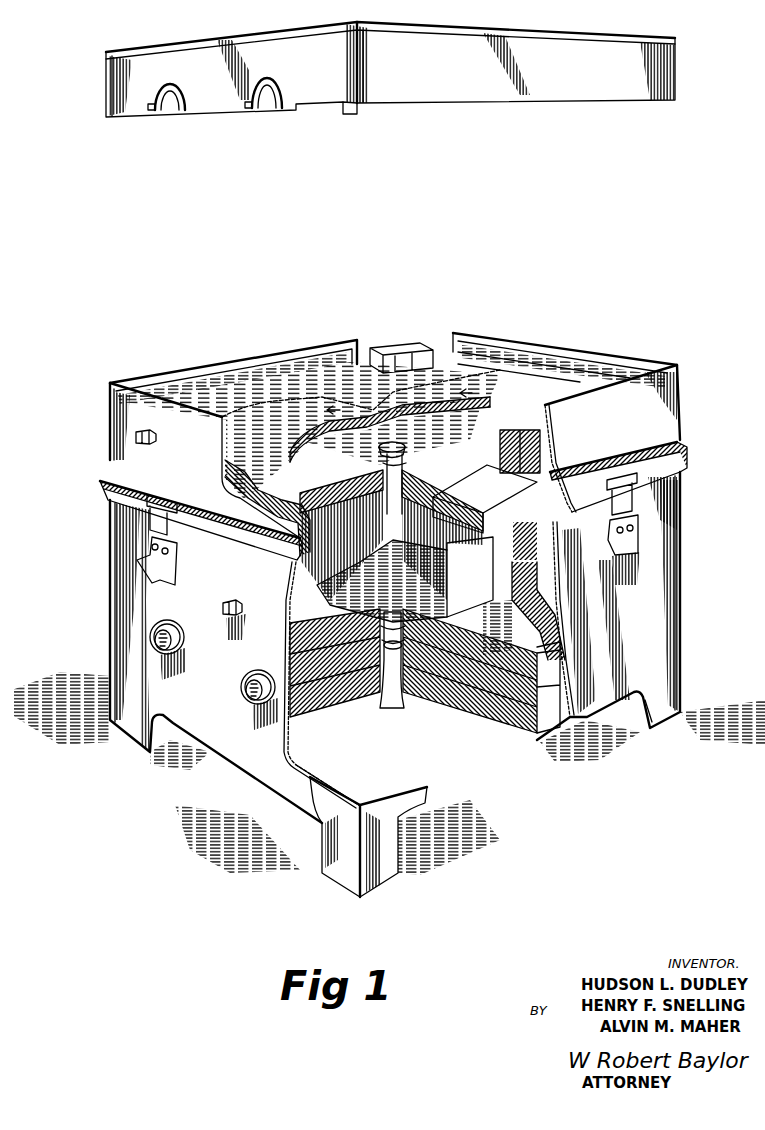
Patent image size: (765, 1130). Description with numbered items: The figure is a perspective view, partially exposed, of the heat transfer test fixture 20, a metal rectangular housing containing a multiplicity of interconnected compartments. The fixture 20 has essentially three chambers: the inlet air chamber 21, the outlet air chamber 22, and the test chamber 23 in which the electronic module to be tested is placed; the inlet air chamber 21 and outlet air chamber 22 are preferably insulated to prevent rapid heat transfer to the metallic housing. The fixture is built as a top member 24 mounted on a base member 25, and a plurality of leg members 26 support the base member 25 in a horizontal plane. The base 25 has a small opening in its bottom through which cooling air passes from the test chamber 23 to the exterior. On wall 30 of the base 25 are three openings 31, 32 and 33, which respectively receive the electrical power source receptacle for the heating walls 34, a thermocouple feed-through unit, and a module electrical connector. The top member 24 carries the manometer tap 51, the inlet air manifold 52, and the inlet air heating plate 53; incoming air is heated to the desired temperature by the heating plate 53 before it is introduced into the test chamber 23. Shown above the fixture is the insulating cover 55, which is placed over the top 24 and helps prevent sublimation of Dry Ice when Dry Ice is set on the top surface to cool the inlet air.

The heat transfer test fixture 20 is at (683, 515).
The inlet air chamber 21 is at (402, 454).
The outlet air chamber 22 is at (388, 712).
The test chamber 23 is at (417, 563).
The top member 24 is at (680, 397).
The base member 25 is at (682, 570).
The leg members 26 is at (660, 722).
The wall 30 is at (222, 741).
The opening 31 is at (173, 622).
The opening 32 is at (222, 612).
The opening 33 is at (252, 668).
The heating walls 34 is at (420, 523).
The manometer tap 51 is at (158, 437).
The inlet air manifold 52 is at (428, 347).
The inlet air heating plate 53 is at (333, 423).
The insulating cover 55 is at (520, 105).